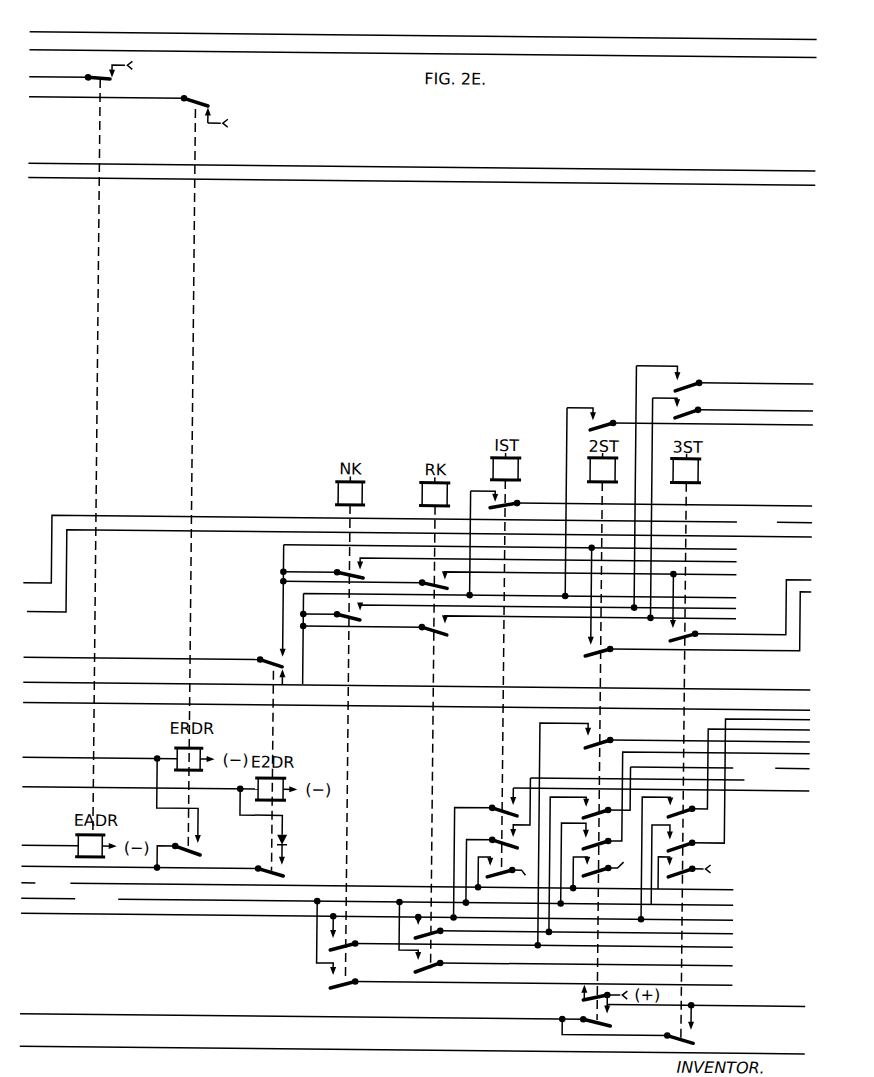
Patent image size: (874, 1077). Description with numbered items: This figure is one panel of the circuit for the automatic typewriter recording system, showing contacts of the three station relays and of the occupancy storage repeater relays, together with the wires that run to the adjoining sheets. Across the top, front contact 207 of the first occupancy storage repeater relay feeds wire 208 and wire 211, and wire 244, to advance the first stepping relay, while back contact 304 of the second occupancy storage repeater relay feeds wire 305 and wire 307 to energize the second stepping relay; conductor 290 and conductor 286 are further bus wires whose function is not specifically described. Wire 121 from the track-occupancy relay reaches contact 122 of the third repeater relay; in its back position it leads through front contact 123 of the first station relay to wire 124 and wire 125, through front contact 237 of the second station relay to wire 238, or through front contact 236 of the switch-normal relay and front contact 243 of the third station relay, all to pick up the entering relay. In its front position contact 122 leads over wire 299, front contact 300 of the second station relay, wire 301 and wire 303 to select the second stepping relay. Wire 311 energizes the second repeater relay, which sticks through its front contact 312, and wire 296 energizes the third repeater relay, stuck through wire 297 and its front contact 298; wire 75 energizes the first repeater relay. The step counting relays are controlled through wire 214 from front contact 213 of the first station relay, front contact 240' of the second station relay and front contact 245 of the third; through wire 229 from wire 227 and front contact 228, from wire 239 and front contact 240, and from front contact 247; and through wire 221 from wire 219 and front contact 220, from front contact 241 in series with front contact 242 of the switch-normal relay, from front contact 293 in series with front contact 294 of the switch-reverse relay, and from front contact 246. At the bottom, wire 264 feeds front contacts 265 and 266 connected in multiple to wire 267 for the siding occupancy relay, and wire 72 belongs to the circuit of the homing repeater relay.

The conductor 290 is at (30, 33).
The wire 211 is at (63, 52).
The front contact of relay EADR 207 is at (107, 72).
The wire 208 is at (68, 78).
The wire 305 is at (97, 98).
The back contact of relay ERDR 304 is at (194, 101).
The wire 244 is at (77, 161).
The wire 307 is at (78, 178).
The front contact of relay 3ST 243 is at (689, 381).
The front contact of relay 2ST 237 is at (606, 412).
The wire 238 is at (814, 410).
The front contact of relay 1ST 123 is at (522, 497).
The wire 124 is at (765, 497).
The wire 125 is at (52, 584).
The conductor 286 is at (68, 612).
The wire 121 is at (72, 656).
The contact of relay E2DR 122 is at (272, 650).
The wire 299 is at (287, 560).
The front contact of relay NK 236 is at (369, 622).
The front contact of relay 2ST 300 is at (620, 646).
The wire 301 is at (792, 644).
The wire 303 is at (79, 703).
The wire 311 is at (75, 756).
The wire 296 is at (77, 786).
The wire 75 is at (46, 845).
The front contact of relay ERDR 312 is at (204, 853).
The front contact of relay E2DR 298 is at (299, 867).
The wire 297 is at (77, 866).
The wire 214 is at (377, 886).
The wire 229 is at (377, 901).
The wire 221 is at (47, 915).
The front contact of relay NK 242 is at (358, 938).
The front contact of relay RK 294 is at (446, 929).
The front contact of relay 2ST 241 is at (620, 732).
The wire 219 is at (813, 779).
The wire 227 is at (652, 780).
The wire 239 is at (719, 766).
The front contact of relay 1ST 220 is at (505, 802).
The front contact of relay 1ST 228 is at (505, 833).
The front contact of relay 1ST 213 is at (508, 867).
The front contact of relay 2ST 293 is at (593, 811).
The front contact of relay 2ST 240 is at (685, 828).
The front contact of relay 2ST 240' is at (610, 870).
The front contact of relay 3ST 246 is at (698, 805).
The front contact of relay 3ST 247 is at (704, 839).
The front contact of relay 3ST 245 is at (701, 863).
The wire 267 is at (78, 1012).
The front contact of relay 2ST 265 is at (622, 1009).
The wire 264 is at (802, 997).
The front contact of relay 3ST 266 is at (710, 1033).
The wire 72 is at (50, 1046).